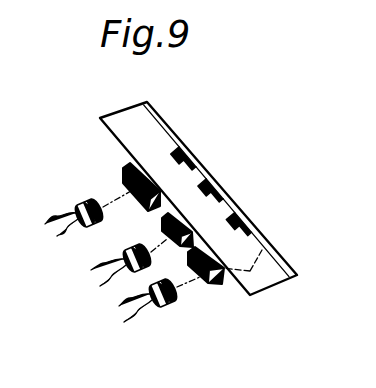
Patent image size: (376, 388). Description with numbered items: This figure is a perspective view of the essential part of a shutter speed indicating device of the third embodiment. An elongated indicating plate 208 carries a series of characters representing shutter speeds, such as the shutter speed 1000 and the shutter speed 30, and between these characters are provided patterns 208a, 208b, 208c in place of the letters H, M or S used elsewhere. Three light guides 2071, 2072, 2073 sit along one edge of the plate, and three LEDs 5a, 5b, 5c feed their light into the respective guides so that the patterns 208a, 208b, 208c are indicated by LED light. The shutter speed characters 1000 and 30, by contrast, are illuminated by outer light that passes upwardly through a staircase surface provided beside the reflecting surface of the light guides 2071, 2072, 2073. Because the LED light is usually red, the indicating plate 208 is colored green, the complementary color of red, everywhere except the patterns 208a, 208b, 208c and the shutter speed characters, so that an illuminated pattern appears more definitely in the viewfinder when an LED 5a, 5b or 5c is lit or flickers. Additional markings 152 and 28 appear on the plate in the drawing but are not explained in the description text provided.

The indicating plate 208 is at (150, 121).
The pattern 208a is at (199, 161).
The pattern 208b is at (226, 194).
The pattern 208c is at (255, 229).
The light guide 2071 is at (123, 167).
The light guide 2072 is at (177, 252).
The light guide 2073 is at (216, 280).
The LED 5a is at (85, 196).
The LED 5b is at (132, 250).
The LED 5c is at (164, 307).
The hidden element 28 is at (262, 248).
The shutter speed 1000 is at (157, 153).
The board marking 152 is at (182, 187).
The shutter speed 30 is at (212, 218).